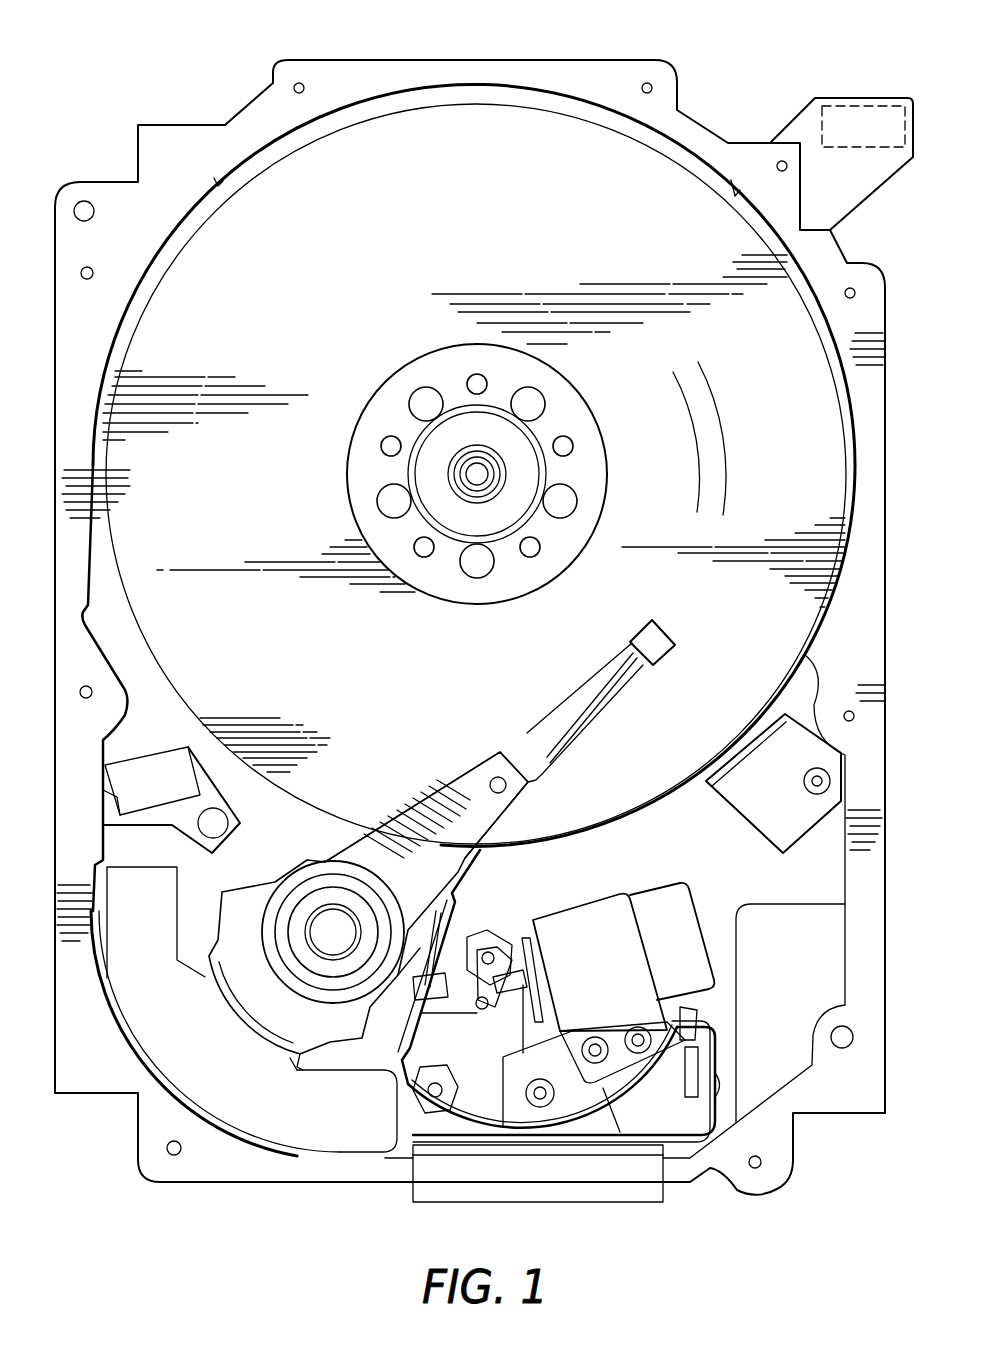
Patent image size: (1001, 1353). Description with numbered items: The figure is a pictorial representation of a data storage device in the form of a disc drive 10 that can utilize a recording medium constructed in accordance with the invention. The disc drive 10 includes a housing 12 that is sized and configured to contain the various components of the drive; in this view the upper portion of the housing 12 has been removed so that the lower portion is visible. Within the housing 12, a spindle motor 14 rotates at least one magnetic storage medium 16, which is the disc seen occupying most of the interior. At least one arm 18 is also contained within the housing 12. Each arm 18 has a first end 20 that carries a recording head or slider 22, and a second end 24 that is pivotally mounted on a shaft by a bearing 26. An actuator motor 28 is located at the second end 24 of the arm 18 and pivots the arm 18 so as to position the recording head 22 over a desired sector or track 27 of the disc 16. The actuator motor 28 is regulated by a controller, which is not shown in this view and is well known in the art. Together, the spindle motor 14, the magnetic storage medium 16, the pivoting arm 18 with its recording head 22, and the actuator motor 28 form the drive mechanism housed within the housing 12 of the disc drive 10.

The disc drive 10 is at (118, 116).
The housing 12 is at (625, 75).
The spindle motor 14 is at (470, 480).
The magnetic storage medium 16 is at (380, 251).
The arm 18 is at (460, 800).
The first end 20 is at (590, 678).
The recording head 22 is at (653, 638).
The second end 24 is at (358, 862).
The bearing 26 is at (320, 920).
The track 27 is at (708, 448).
The actuator motor 28 is at (210, 1063).